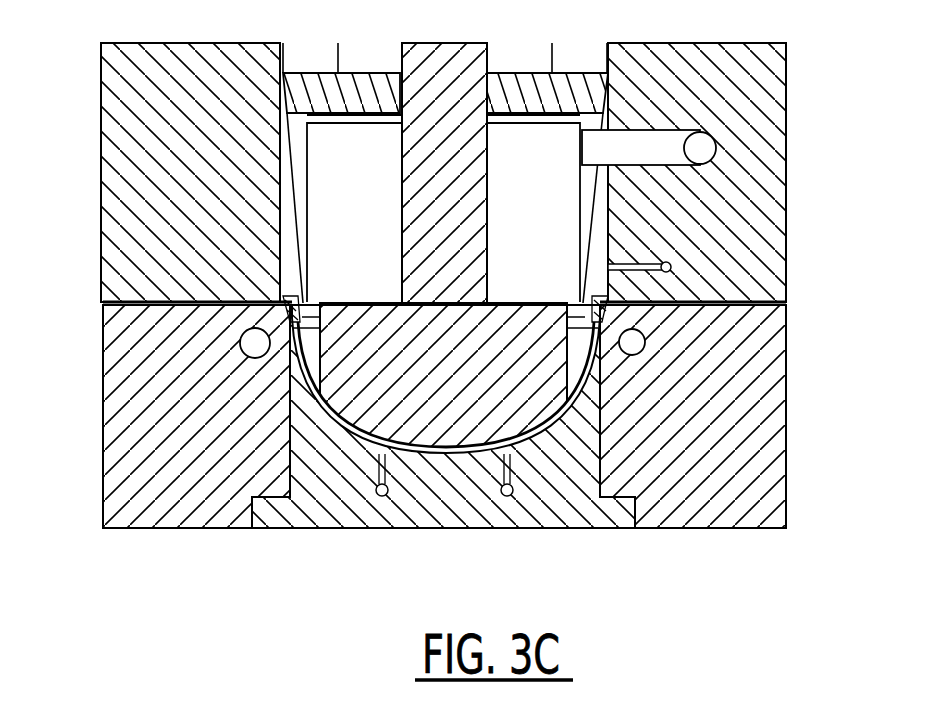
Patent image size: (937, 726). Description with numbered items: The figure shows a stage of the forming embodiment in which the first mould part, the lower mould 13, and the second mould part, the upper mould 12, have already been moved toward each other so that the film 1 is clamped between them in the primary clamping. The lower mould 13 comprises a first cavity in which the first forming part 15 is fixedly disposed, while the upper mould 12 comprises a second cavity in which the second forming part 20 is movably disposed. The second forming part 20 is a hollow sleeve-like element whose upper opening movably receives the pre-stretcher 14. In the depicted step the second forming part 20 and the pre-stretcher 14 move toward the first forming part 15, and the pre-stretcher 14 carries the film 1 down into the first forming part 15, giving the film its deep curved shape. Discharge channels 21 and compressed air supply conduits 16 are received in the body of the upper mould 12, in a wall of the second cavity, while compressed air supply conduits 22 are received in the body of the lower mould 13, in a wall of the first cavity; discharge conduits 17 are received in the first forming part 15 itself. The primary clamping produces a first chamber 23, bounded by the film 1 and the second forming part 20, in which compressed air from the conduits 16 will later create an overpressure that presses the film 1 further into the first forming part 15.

The film 1 is at (733, 301).
The upper mould 12 is at (752, 212).
The lower mould 13 is at (740, 433).
The pre-stretcher 14 is at (350, 392).
The first forming part 15 is at (317, 497).
The compressed air supply conduit 16 is at (700, 147).
The discharge conduit 17 is at (513, 490).
The second forming part 20 is at (292, 318).
The discharge channel 21 is at (666, 268).
The compressed air supply conduit 22 is at (632, 342).
The first chamber 23 is at (342, 210).